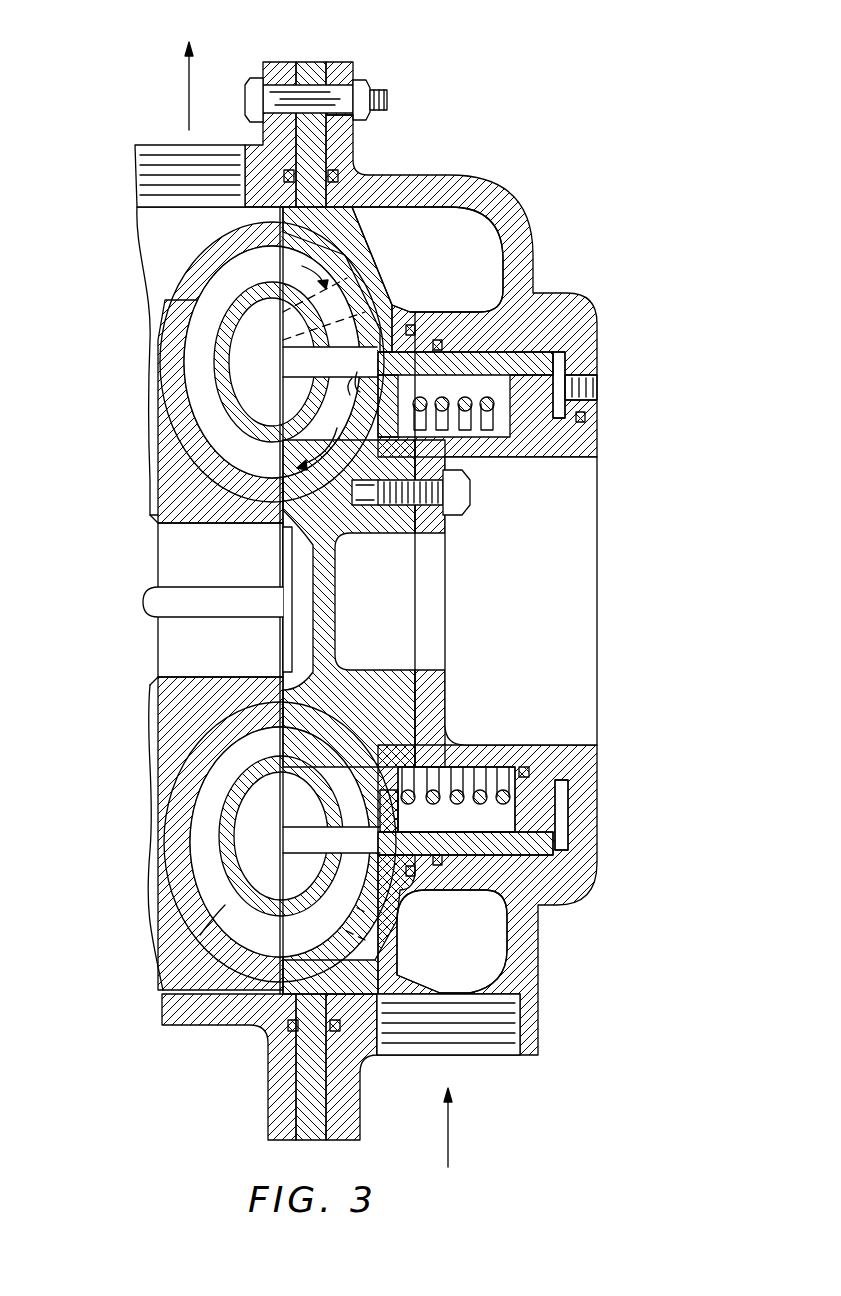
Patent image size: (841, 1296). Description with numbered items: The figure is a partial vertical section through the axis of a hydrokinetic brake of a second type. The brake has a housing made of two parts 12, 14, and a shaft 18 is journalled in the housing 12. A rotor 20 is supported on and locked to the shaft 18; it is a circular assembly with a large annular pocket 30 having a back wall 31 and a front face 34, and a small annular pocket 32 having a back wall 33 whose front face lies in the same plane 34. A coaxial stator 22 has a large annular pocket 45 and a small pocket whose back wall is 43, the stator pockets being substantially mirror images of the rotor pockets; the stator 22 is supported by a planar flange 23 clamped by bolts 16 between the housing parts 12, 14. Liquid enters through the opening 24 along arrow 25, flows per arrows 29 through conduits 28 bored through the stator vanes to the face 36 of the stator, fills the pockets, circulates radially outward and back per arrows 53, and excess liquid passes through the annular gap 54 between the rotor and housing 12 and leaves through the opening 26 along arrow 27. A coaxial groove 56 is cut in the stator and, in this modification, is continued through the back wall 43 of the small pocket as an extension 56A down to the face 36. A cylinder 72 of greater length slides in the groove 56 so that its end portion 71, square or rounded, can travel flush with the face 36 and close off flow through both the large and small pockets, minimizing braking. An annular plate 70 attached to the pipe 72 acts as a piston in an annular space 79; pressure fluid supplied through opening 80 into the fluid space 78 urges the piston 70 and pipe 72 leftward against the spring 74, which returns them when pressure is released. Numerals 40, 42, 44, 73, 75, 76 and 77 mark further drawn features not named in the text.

The housing 12 is at (137, 262).
The housing 14 is at (520, 225).
The bolts 16 is at (388, 96).
The shaft 18 is at (170, 626).
The rotor 20 is at (158, 495).
The stator 22 is at (372, 292).
The planar flange 23 is at (305, 62).
The opening 24 is at (500, 1058).
The arrow 25 is at (455, 1128).
The opening 26 is at (150, 145).
The arrow 27 is at (196, 92).
The conduit 28 is at (362, 262).
The arrows 29 is at (403, 288).
The large annular pocket 30 is at (195, 880).
The back wall 31 is at (160, 905).
The small annular pocket 32 is at (250, 792).
The back wall 33 is at (175, 825).
The front face 34 is at (280, 712).
The face 36 is at (286, 741).
The pump blade 40 is at (212, 930).
The turbine blade 42 is at (345, 930).
The back wall 43 is at (300, 452).
The inner ring 44 is at (283, 345).
The large annular pocket 45 is at (364, 603).
The arrows 53 is at (324, 592).
The annular gap 54 is at (254, 998).
The groove 56 is at (352, 389).
The extension 56A is at (330, 361).
The annular plate 70 is at (572, 373).
The end portion 71 is at (374, 360).
The cylinder 72 is at (466, 380).
The retainer plate 73 is at (528, 768).
The spring 74 is at (484, 768).
The spring chamber 75 is at (405, 800).
The seal 76 is at (526, 768).
The chamber 77 is at (435, 862).
The fluid space 78 is at (568, 816).
The annular space 79 is at (562, 356).
The opening 80 is at (600, 390).